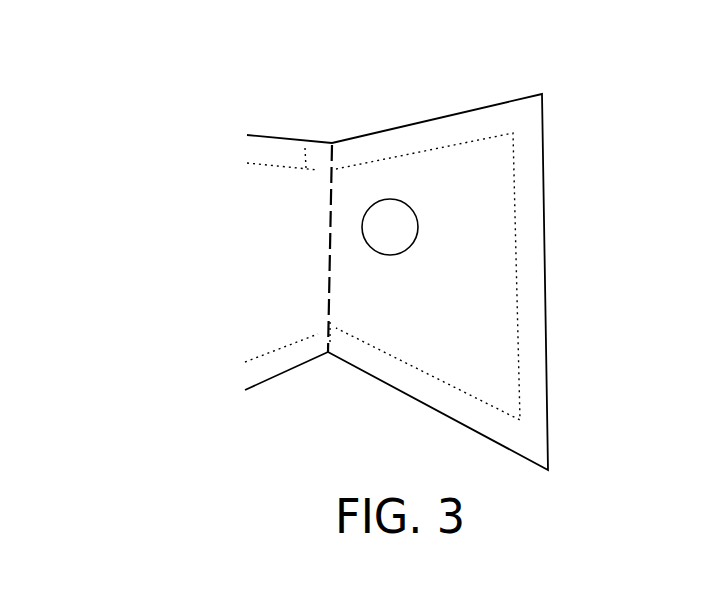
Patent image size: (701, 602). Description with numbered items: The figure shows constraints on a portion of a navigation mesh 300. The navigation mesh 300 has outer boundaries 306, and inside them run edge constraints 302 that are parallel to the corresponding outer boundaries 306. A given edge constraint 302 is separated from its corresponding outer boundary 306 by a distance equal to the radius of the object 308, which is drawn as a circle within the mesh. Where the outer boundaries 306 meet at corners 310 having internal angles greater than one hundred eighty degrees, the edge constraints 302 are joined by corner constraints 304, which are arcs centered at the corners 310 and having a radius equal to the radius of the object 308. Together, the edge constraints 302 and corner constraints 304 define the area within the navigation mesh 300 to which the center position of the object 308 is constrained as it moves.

The navigation mesh 300 is at (140, 109).
The edge constraints 302 is at (460, 142).
The corner constraints 304 is at (360, 160).
The outer boundaries 306 is at (507, 100).
The object 308 is at (371, 237).
The corners 310 is at (331, 147).